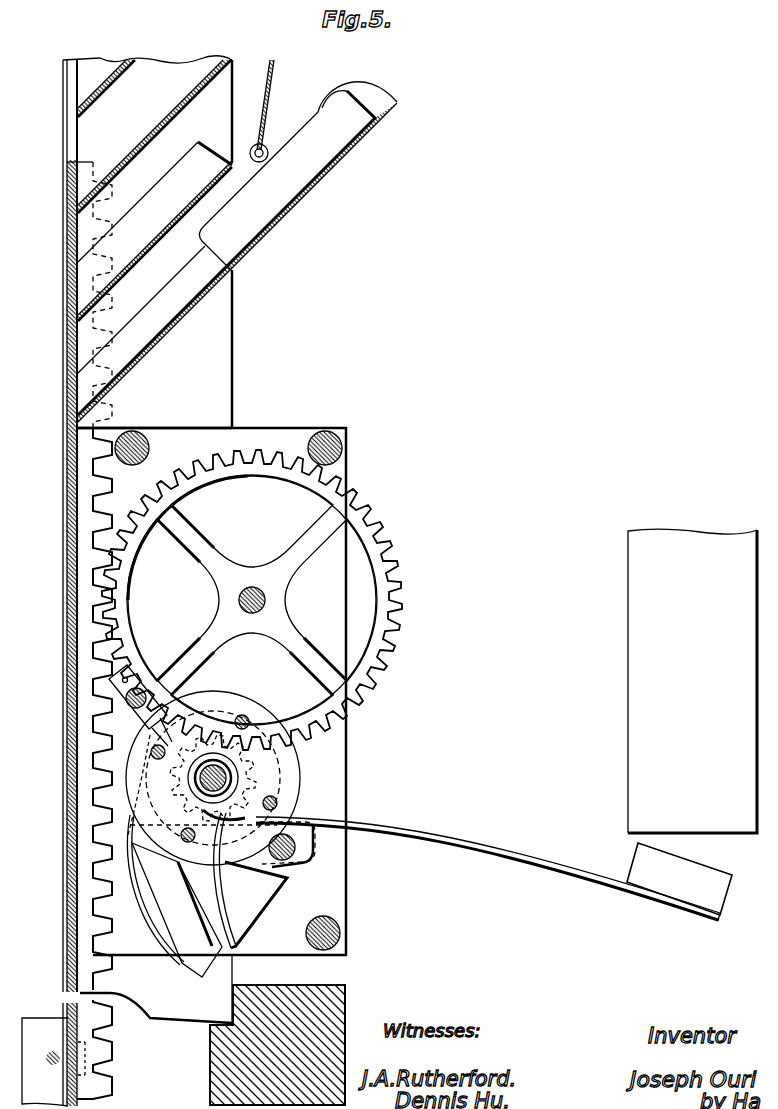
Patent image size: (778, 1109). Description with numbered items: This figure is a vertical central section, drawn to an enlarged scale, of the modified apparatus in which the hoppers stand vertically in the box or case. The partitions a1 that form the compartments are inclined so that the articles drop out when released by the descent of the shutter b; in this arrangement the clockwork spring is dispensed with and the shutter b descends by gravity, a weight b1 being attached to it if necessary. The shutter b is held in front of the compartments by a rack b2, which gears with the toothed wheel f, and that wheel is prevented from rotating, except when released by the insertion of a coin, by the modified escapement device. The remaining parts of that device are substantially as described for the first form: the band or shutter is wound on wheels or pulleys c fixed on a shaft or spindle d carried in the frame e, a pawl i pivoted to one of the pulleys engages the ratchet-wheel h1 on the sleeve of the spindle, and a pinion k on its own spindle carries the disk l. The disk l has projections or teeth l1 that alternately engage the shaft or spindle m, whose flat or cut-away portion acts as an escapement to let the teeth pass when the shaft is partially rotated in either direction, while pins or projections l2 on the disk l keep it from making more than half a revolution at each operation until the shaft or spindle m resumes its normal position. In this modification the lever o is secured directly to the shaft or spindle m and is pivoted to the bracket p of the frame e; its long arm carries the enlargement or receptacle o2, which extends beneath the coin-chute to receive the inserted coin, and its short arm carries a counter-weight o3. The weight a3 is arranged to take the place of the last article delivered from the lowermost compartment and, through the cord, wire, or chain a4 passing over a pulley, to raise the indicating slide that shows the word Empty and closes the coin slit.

The partitions a1 is at (155, 208).
The weight a3 is at (237, 252).
The cord, wire, or chain a4 is at (274, 72).
The shutter b is at (66, 372).
The weight b1 is at (45, 1062).
The rack b2 is at (110, 492).
The wheels or pulleys c is at (692, 681).
The shaft or spindle d is at (262, 593).
The frame e is at (228, 688).
The toothed wheel f is at (252, 600).
The ratchet-wheel h1 is at (264, 754).
The pawl i is at (287, 803).
The pinion k is at (243, 760).
The disk l is at (220, 828).
The projections or teeth l1 is at (254, 704).
The pins or projections l2 is at (225, 793).
The shaft or spindle m is at (300, 856).
The lever o is at (497, 847).
The enlargement or receptacle o2 is at (679, 879).
The counter-weight o3 is at (234, 880).
The bracket p is at (259, 904).